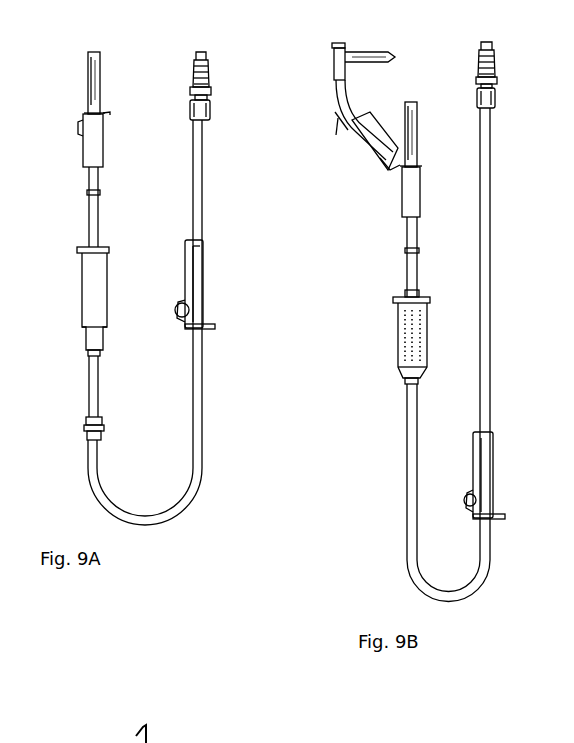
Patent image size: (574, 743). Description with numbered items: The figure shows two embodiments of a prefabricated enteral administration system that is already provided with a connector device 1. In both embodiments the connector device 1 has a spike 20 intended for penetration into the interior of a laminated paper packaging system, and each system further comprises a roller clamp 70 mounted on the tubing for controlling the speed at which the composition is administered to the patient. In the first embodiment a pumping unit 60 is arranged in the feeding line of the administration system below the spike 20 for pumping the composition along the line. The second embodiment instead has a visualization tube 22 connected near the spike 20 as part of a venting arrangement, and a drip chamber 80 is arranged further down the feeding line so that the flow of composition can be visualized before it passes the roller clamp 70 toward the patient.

In FIG. 9A, the connector device 1 is at (66, 116).
In FIG. 9B, the connector device 1 is at (412, 68).
In FIG. 9A, the spike 20 is at (110, 88).
In FIG. 9B, the spike 20 is at (424, 134).
In FIG. 9B, the visualization tube 22 is at (362, 148).
In FIG. 9A, the pumping unit 60 is at (93, 318).
In FIG. 9A, the roller clamp 70 is at (203, 292).
In FIG. 9B, the roller clamp 70 is at (493, 480).
In FIG. 9B, the drip chamber 80 is at (404, 345).